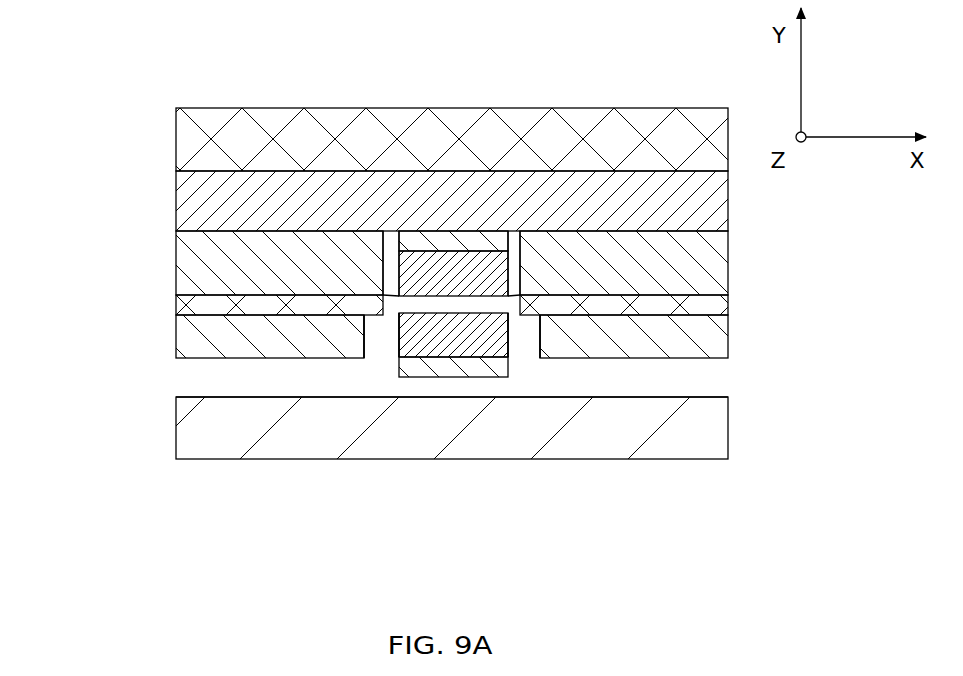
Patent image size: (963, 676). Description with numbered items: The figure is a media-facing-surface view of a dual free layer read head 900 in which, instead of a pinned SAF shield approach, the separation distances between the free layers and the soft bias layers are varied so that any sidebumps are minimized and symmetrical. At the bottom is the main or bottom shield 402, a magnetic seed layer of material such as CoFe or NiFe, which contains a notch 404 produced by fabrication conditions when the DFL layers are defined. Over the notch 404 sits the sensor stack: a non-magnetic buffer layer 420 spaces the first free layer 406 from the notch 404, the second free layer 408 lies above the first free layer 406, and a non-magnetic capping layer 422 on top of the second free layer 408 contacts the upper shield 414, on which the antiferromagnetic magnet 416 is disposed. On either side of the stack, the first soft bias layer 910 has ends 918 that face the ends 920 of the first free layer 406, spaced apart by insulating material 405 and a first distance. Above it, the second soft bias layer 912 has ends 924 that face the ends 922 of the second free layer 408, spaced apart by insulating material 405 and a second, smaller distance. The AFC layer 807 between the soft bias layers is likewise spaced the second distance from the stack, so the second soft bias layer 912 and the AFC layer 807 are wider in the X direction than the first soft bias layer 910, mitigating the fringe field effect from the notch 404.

The read head 900 is at (127, 68).
The antiferromagnetic magnet 416 is at (433, 149).
The upper shield 414 is at (433, 215).
The second soft bias layer 912 is at (257, 277).
The capping layer 422 is at (432, 247).
The second free layer 408 is at (436, 285).
The AFC layer 807 is at (176, 305).
The first soft bias layer 910 is at (237, 349).
The first free layer 406 is at (436, 350).
The buffer layer 420 is at (395, 372).
The bottom shield 402 is at (393, 442).
The notch 404 is at (465, 397).
The insulating material 405 is at (250, 389).
The ends of the second soft bias layer 924 is at (385, 257).
The ends of the second free layer 922 is at (395, 267).
The ends of the first soft bias layer 918 is at (363, 340).
The ends of the first free layer 920 is at (395, 340).